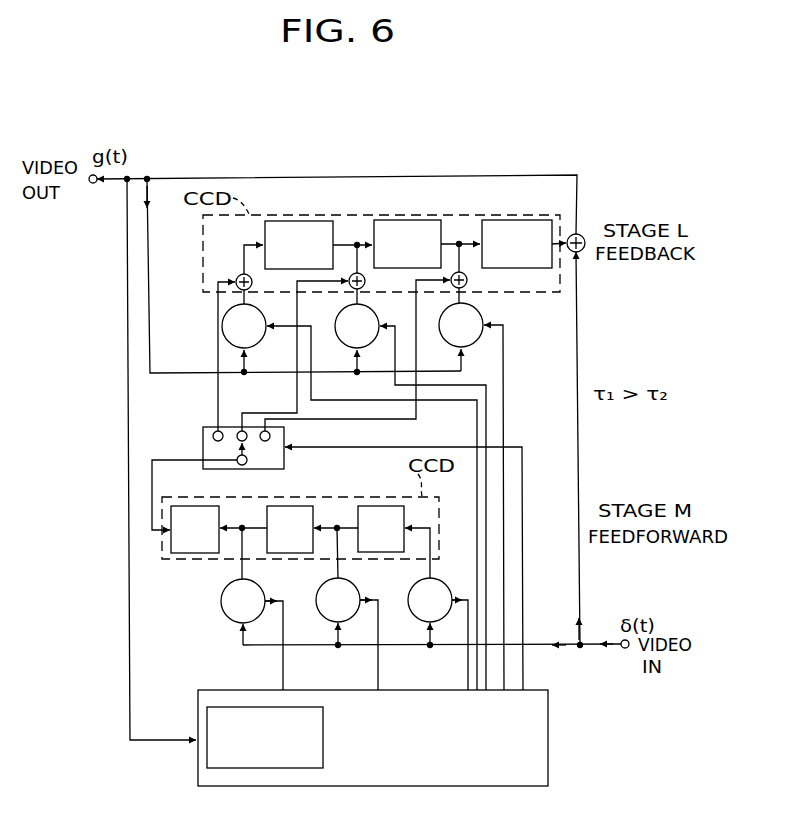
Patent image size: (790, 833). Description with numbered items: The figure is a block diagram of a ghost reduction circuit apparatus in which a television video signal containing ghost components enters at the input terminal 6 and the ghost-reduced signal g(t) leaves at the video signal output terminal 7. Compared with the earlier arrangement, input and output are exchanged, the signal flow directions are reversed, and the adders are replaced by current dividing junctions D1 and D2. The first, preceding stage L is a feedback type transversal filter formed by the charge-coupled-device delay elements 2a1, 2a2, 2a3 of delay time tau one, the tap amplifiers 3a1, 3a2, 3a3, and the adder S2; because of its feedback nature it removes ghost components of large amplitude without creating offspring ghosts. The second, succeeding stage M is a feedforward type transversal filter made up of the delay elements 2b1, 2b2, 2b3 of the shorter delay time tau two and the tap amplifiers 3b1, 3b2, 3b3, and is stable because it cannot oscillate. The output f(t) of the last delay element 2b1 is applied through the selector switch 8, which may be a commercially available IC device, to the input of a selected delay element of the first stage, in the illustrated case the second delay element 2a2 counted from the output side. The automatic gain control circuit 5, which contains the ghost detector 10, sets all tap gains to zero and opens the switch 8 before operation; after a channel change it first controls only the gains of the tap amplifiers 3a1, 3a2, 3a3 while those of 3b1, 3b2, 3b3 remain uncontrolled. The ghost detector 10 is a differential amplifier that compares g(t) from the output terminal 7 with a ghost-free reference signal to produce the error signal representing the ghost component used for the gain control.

The video signal output terminal 7 is at (93, 184).
The current dividing junction D2 is at (147, 175).
The delay element 2a3 is at (300, 219).
The delay element 2a2 is at (408, 219).
The delay element 2a1 is at (518, 219).
The adder S2 is at (578, 234).
The tap amplifier 3a3 is at (266, 340).
The tap amplifier 3a2 is at (374, 297).
The tap amplifier 3a1 is at (478, 310).
The selector switch 8 is at (203, 441).
The delay element 2b1 is at (194, 506).
The delay element 2b2 is at (294, 506).
The delay element 2b3 is at (377, 506).
The tap amplifier 3b1 is at (223, 616).
The tap amplifier 3b2 is at (317, 587).
The tap amplifier 3b3 is at (411, 587).
The current dividing junction D1 is at (580, 650).
The input terminal 6 is at (625, 649).
The ghost detector 10 is at (274, 769).
The automatic gain control circuit 5 is at (459, 787).